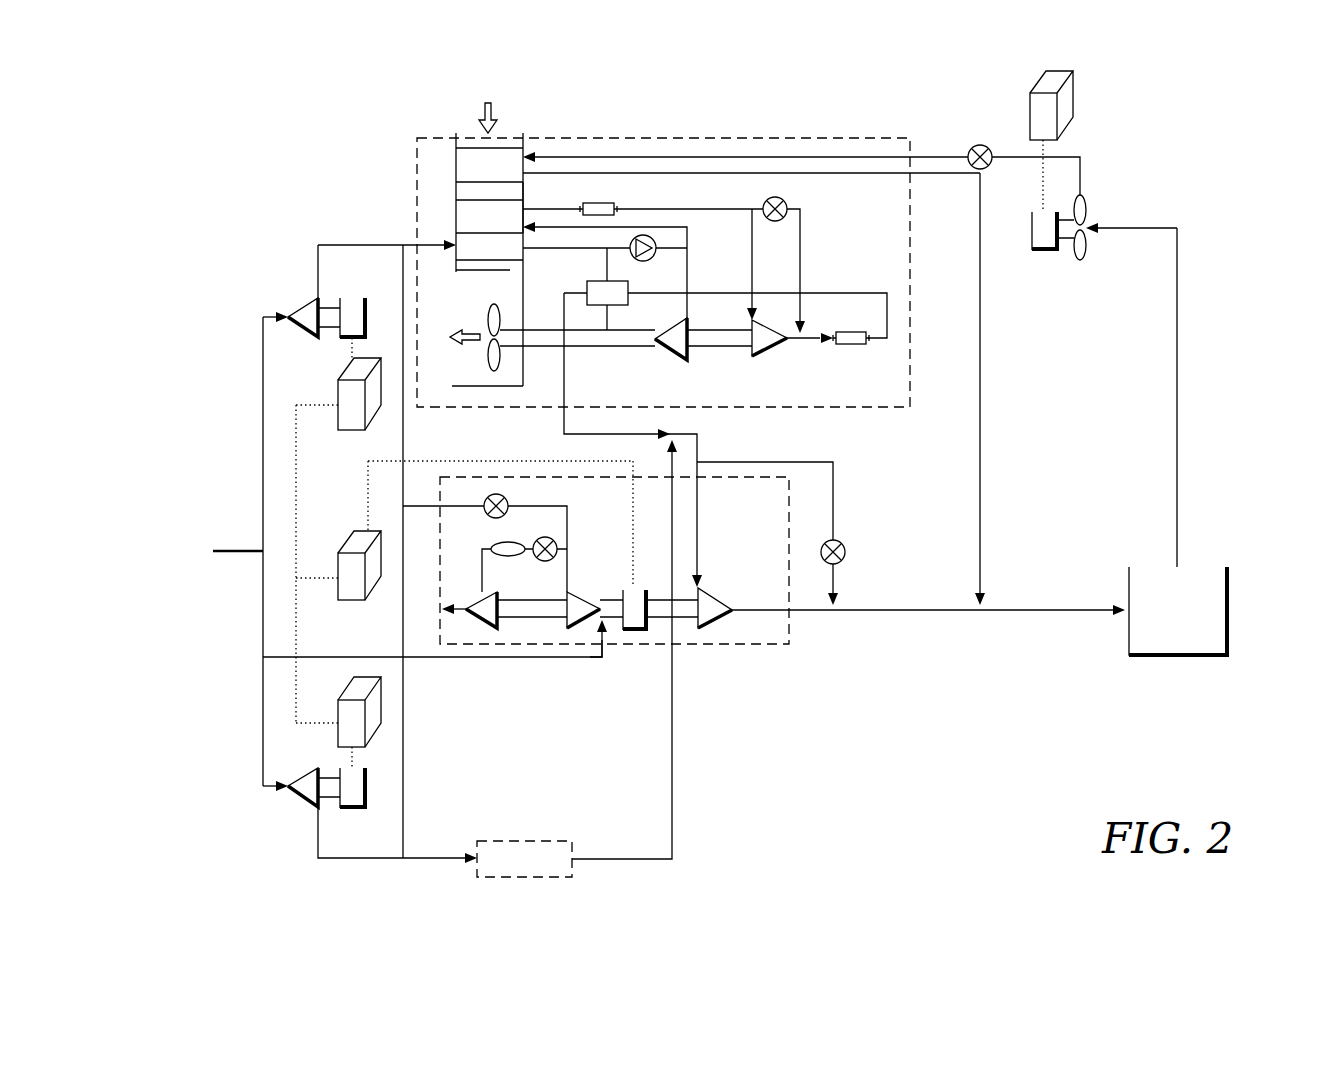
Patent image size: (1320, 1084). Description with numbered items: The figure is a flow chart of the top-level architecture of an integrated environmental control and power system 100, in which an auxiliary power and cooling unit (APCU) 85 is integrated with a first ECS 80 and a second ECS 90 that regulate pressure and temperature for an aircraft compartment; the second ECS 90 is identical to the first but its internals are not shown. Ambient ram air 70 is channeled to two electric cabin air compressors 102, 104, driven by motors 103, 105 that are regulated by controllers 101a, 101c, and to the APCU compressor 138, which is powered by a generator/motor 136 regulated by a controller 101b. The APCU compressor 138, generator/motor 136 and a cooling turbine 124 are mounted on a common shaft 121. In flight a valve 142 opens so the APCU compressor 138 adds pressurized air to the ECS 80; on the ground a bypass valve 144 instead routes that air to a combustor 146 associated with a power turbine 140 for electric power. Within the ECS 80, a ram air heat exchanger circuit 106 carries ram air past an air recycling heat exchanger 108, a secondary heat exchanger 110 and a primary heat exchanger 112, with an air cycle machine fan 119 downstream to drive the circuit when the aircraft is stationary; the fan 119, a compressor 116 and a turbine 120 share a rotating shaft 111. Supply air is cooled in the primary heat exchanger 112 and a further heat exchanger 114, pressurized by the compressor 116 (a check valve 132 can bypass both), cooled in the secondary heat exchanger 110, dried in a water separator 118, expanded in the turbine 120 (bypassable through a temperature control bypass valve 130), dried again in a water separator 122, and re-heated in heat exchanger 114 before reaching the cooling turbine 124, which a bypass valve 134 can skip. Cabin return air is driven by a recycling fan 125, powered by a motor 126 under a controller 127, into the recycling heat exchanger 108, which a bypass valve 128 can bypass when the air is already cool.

The integrated environmental control and power system 100 is at (208, 188).
The ambient ram air 70 is at (479, 116).
The first ECS 80 is at (892, 138).
The auxiliary power and cooling unit (APCU) 85 is at (779, 649).
The second ECS 90 is at (560, 841).
The ram air heat exchanger circuit 106 is at (456, 182).
The air recycling heat exchanger 108 is at (521, 146).
The secondary heat exchanger 110 is at (523, 205).
The primary heat exchanger 112 is at (473, 262).
The shared rotating shaft 111 is at (540, 350).
The heat exchanger 114 is at (590, 281).
The air cycle machine compressor 116 is at (667, 357).
The water separator 118 is at (598, 203).
The air cycle machine fan 119 is at (488, 353).
The air cycle machine turbine 120 is at (775, 353).
The shaft 121 is at (612, 623).
The water separator 122 is at (850, 346).
The cooling turbine 124 is at (710, 600).
The recycling fan 125 is at (1090, 208).
The motor 126 is at (1046, 252).
The controller 127 is at (1076, 97).
The bypass valve 128 is at (980, 145).
The temperature control bypass valve 130 is at (783, 201).
The check valve 132 is at (636, 258).
The bypass valve 134 is at (842, 546).
The generator/motor 136 is at (640, 588).
The APCU compressor 138 is at (573, 600).
The power turbine 140 is at (491, 600).
The valve 142 is at (506, 505).
The bypass valve 144 is at (543, 539).
The combustor 146 is at (492, 547).
The cabin air compressor 102 is at (298, 306).
The motor 103 is at (352, 296).
The cabin air compressor 104 is at (300, 802).
The motor 105 is at (352, 811).
The controller 101a is at (338, 376).
The controller 101b is at (354, 531).
The controller 101c is at (338, 740).